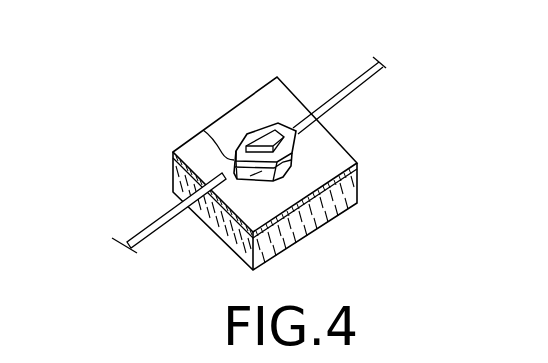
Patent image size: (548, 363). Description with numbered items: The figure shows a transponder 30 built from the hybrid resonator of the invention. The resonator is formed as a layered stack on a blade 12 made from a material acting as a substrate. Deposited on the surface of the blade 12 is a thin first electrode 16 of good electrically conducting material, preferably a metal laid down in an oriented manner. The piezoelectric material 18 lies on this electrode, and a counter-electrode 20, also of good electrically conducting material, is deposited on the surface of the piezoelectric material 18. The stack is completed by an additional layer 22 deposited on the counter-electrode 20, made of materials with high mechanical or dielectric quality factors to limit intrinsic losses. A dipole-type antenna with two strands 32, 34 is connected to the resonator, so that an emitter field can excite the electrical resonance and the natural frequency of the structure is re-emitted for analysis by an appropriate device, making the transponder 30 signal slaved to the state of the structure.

The blade 12 is at (287, 238).
The first electrode 16 is at (357, 163).
The piezoelectric material 18 is at (293, 148).
The counter-electrode 20 is at (203, 130).
The additional layer 22 is at (268, 136).
The transponder 30 is at (180, 90).
The antenna strand 32 is at (145, 237).
The antenna strand 34 is at (342, 90).